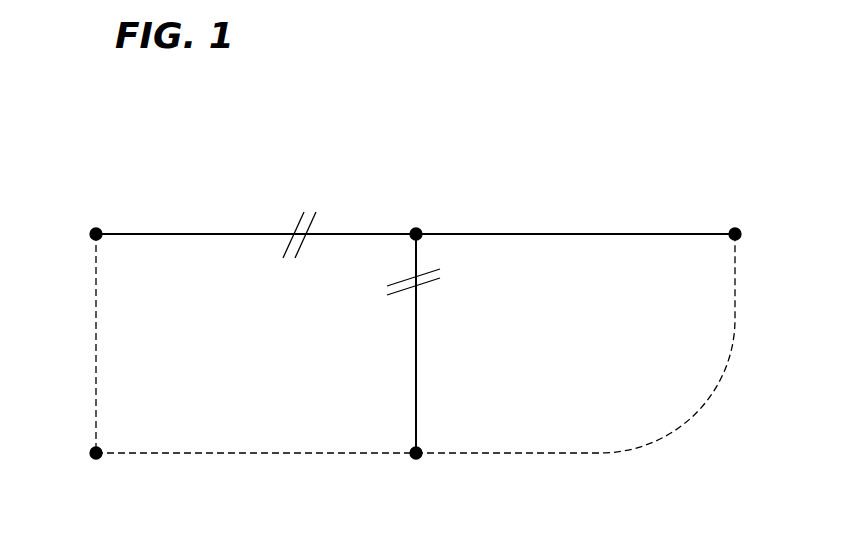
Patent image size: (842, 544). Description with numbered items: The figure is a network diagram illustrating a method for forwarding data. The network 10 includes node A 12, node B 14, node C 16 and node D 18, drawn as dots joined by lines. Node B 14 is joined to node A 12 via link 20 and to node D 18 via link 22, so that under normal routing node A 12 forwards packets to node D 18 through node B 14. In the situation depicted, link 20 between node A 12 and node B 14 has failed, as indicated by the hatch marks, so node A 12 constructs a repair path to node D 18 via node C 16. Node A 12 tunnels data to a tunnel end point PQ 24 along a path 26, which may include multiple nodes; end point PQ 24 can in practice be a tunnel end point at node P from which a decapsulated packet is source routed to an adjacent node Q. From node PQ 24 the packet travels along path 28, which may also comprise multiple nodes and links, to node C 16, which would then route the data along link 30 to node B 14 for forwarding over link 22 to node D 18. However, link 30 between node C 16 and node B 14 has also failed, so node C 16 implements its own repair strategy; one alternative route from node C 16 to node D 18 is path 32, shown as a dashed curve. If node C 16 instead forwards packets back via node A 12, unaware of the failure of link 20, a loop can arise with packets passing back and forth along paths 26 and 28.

The network 10 is at (280, 159).
The node A 12 is at (94, 240).
The node B 14 is at (410, 238).
The node C 16 is at (412, 450).
The node D 18 is at (731, 230).
The link 20 is at (250, 234).
The link 22 is at (623, 234).
The tunnel end point PQ 24 is at (94, 452).
The path 26 is at (96, 390).
The path 28 is at (293, 453).
The link 30 is at (417, 362).
The path 32 is at (700, 398).